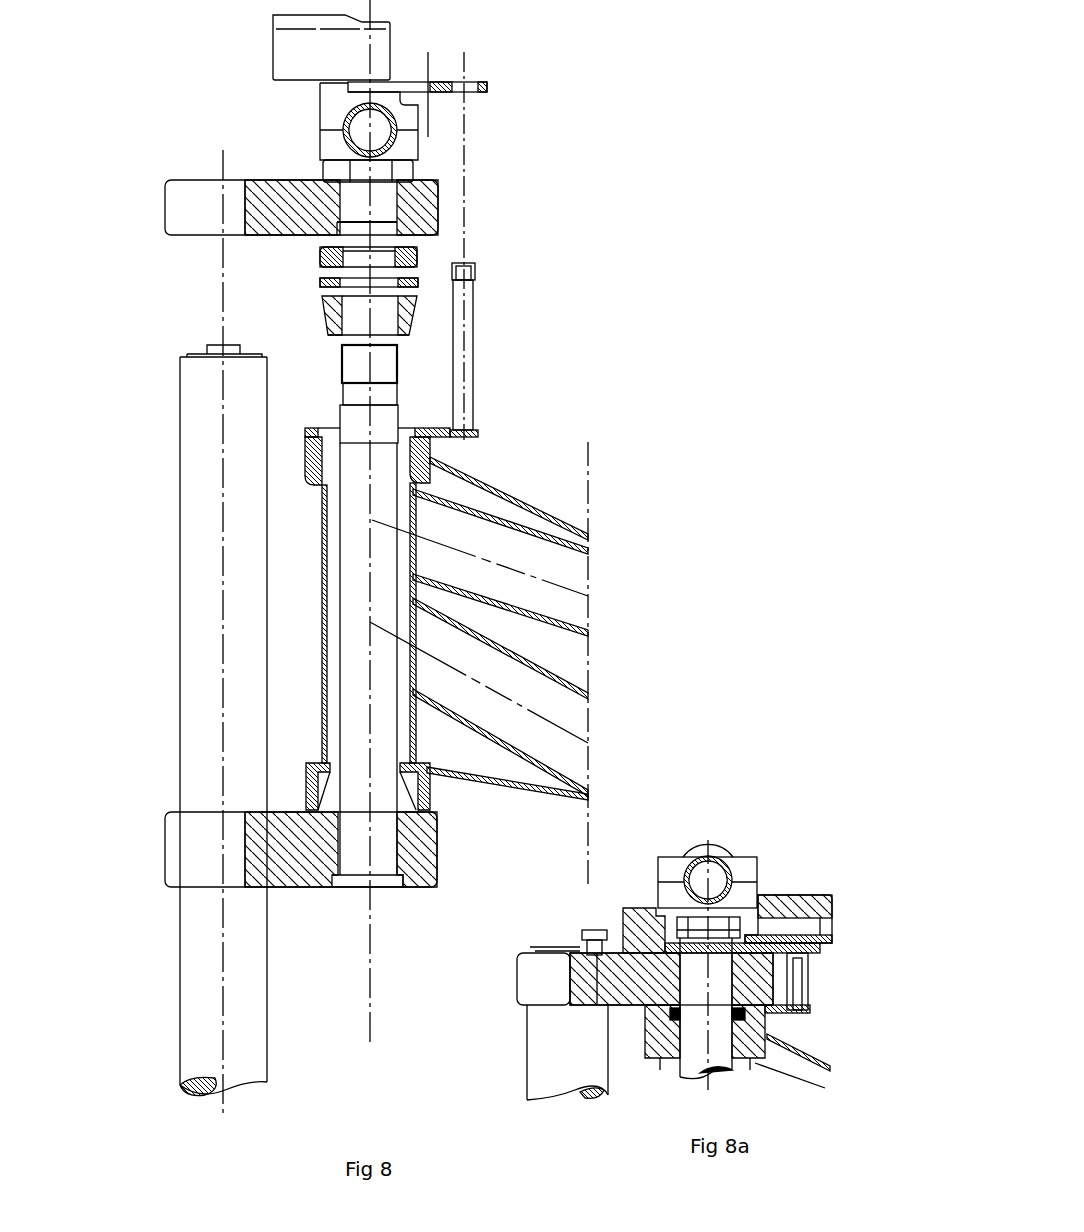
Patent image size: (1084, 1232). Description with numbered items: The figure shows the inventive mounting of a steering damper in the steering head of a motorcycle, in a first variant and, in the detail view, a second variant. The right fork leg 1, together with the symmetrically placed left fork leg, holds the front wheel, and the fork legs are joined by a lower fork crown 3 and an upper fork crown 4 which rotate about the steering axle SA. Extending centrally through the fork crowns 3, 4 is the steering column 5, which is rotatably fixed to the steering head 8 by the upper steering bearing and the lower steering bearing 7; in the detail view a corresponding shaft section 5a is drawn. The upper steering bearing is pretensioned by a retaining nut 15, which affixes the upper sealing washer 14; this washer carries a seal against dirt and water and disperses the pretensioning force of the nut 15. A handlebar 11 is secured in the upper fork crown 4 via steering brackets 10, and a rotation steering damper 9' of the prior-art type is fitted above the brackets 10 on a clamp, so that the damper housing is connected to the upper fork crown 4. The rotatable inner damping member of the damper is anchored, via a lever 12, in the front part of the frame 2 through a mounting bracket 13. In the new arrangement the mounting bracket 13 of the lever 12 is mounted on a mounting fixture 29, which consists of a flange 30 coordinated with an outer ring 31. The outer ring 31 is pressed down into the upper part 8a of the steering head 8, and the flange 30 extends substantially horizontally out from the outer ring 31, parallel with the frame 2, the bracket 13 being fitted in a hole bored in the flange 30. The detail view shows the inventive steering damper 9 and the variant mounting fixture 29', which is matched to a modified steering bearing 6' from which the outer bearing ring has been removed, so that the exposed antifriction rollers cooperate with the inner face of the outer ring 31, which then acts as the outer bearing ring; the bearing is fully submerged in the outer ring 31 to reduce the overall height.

In FIG. 8, the right fork leg 1 is at (185, 600).
In FIG. 8, the frame 2 is at (548, 557).
In FIG. 8, the lower fork crown 3 is at (195, 853).
In FIG. 8, the upper fork crown 4 is at (195, 203).
In FIG. 8, the steering column 5 is at (340, 367).
In FIG. 8A, the shaft section 5a is at (652, 1020).
In FIG. 8, the modified steering bearing 6' is at (233, 309).
In FIG. 8, the lower steering bearing 7 is at (306, 780).
In FIG. 8, the steering head 8 is at (322, 552).
In FIG. 8, the upper part of the steering head 8a is at (306, 473).
In FIG. 8A, the steering damper 9 is at (800, 900).
In FIG. 8, the rotation steering damper 9' is at (473, 47).
In FIG. 8, the steering bracket 10 is at (325, 118).
In FIG. 8A, the steering bracket 10 is at (730, 858).
In FIG. 8, the handlebar 11 is at (400, 143).
In FIG. 8A, the handlebar 11 is at (692, 863).
In FIG. 8, the lever 12 is at (487, 90).
In FIG. 8A, the lever 12 is at (822, 945).
In FIG. 8, the mounting bracket 13 is at (470, 381).
In FIG. 8A, the mounting bracket 13 is at (800, 983).
In FIG. 8, the upper sealing washer 14 is at (415, 283).
In FIG. 8, the retaining nut 15 is at (400, 250).
In FIG. 8A, the retaining nut 15 is at (762, 1015).
In FIG. 8A, the mounting fixture 29 is at (838, 1002).
In FIG. 8, the mounting fixture 29' is at (542, 461).
In FIG. 8, the flange 30 is at (455, 430).
In FIG. 8, the outer ring 31 is at (306, 463).
In FIG. 8, the steering axle SA is at (365, 677).
In FIG. 8A, the steering axle SA is at (710, 862).